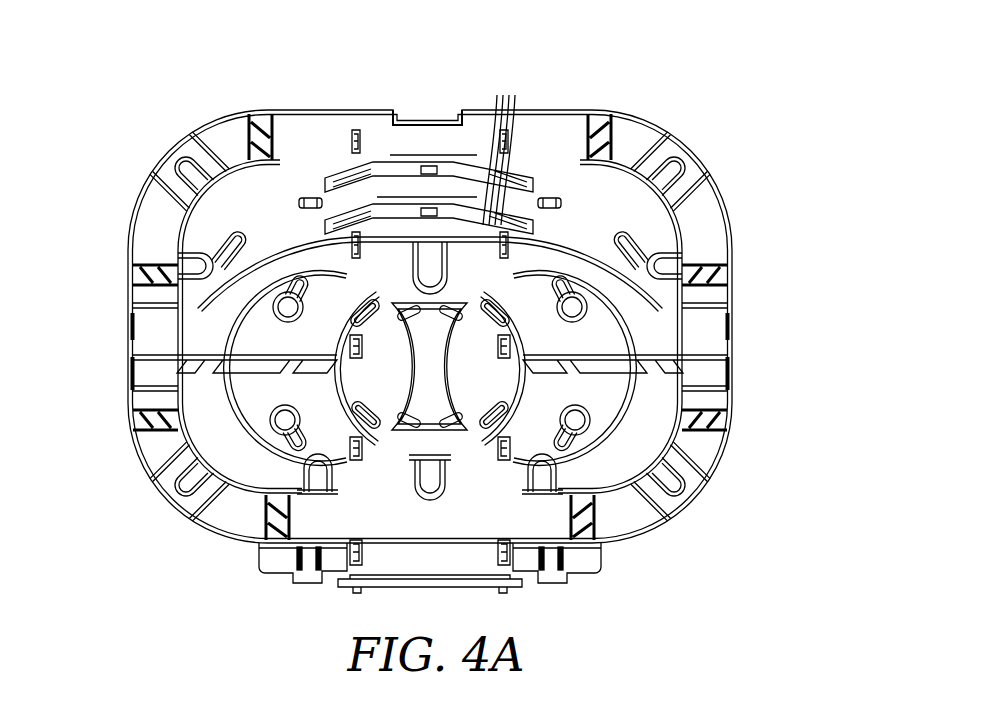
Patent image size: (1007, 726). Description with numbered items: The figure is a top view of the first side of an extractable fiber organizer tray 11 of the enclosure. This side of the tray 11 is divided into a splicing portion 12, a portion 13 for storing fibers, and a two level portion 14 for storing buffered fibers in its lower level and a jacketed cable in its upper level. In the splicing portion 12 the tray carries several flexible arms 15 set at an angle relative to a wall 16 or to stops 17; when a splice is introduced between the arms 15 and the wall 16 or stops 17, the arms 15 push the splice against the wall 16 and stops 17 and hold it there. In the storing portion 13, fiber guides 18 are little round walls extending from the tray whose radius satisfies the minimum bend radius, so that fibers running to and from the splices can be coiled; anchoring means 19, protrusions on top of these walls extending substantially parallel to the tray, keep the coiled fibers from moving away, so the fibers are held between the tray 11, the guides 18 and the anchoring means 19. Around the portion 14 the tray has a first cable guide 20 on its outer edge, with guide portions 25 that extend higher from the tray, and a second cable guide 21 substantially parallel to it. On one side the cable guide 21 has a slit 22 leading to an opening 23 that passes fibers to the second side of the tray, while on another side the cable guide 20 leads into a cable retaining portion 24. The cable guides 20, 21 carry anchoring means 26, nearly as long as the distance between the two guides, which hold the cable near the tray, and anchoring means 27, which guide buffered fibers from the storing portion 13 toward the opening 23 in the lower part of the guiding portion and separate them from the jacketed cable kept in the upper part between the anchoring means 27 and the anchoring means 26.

The extractable fiber organizer tray 11 is at (432, 341).
The splicing portion 12 is at (405, 185).
The portion for storing fibers 13 is at (337, 413).
The two level portion for storing fibers and a jacketed cable 14 is at (147, 294).
The flexible arms 15 is at (501, 147).
The wall 16 is at (462, 245).
The stops 17 is at (299, 204).
The fiber guides 18 is at (300, 298).
The anchoring means 19 is at (368, 397).
The first cable guide 20 is at (132, 201).
The second cable guide 21 is at (316, 352).
The slit 22 is at (728, 352).
The opening 23 is at (703, 363).
The cable retaining portion 24 is at (309, 572).
The guide portions 25 is at (430, 108).
The anchoring means 26 is at (190, 178).
The anchoring means 27 is at (262, 118).